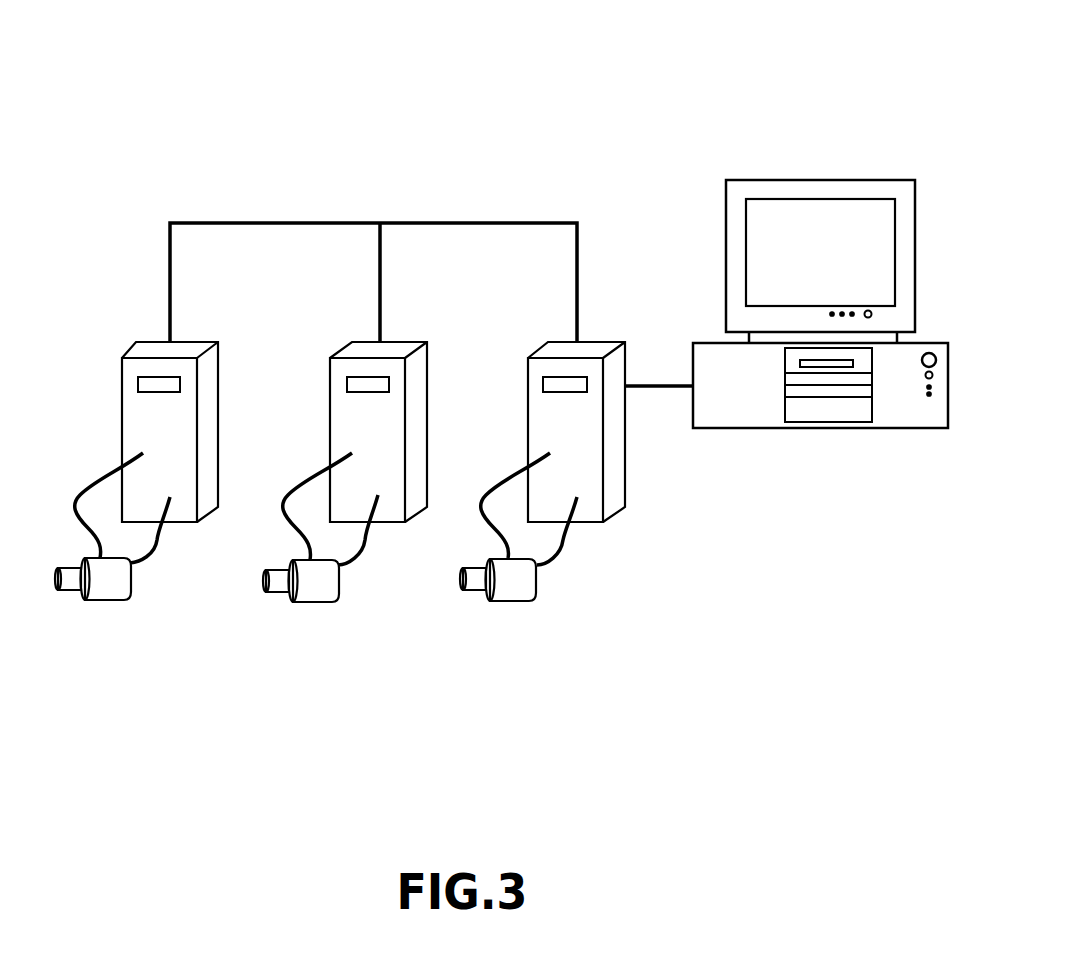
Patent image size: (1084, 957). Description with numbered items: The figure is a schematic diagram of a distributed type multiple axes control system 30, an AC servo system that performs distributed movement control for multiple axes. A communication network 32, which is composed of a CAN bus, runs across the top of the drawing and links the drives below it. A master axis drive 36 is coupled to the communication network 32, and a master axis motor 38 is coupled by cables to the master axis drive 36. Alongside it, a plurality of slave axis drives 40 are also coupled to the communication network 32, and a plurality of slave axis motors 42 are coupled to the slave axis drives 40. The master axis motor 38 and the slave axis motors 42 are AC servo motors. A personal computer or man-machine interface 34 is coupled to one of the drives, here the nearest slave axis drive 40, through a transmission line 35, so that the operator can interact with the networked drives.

The distributed type multiple axes control system 30 is at (388, 48).
The communication network 32 is at (447, 223).
The personal computer or man-machine interface 34 is at (903, 413).
The transmission line 35 is at (657, 383).
The master axis drive 36 is at (207, 432).
The master axis motor 38 is at (105, 590).
The slave axis drive 40 is at (417, 432).
The slave axis motor 42 is at (313, 590).